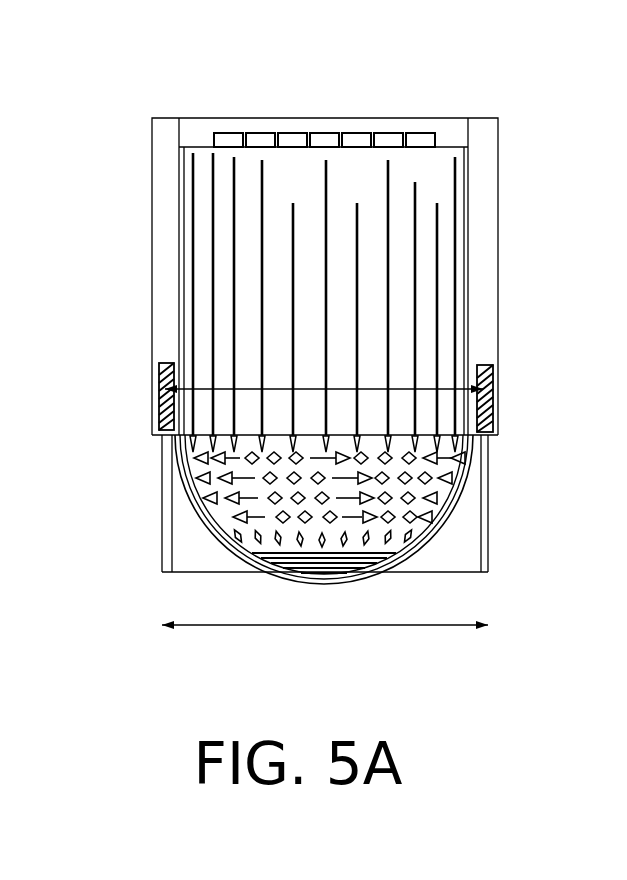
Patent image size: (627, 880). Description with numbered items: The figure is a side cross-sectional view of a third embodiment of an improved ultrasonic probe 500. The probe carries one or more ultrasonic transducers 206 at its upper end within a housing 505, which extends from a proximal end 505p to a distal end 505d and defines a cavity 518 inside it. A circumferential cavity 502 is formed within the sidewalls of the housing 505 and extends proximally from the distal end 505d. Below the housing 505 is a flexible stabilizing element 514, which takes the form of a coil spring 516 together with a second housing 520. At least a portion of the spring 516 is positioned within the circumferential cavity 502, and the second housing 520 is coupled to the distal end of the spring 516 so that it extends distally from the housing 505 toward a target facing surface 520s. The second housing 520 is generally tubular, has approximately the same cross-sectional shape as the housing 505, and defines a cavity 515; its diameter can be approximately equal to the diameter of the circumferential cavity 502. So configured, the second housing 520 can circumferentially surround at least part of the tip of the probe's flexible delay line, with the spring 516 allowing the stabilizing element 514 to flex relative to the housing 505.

The ultrasonic probe 500 is at (431, 96).
The housing 505 is at (170, 128).
The proximal end 505p is at (513, 124).
The distal end 505d is at (510, 436).
The circumferential cavity 502 is at (492, 364).
The ultrasonic transducers 206 is at (288, 131).
The cavity 518 is at (110, 150).
The coil spring 516 is at (492, 397).
The flexible stabilizing element 514 is at (138, 365).
The cavity 515 is at (192, 561).
The second housing 520 is at (488, 505).
The target facing surface 520s is at (457, 573).